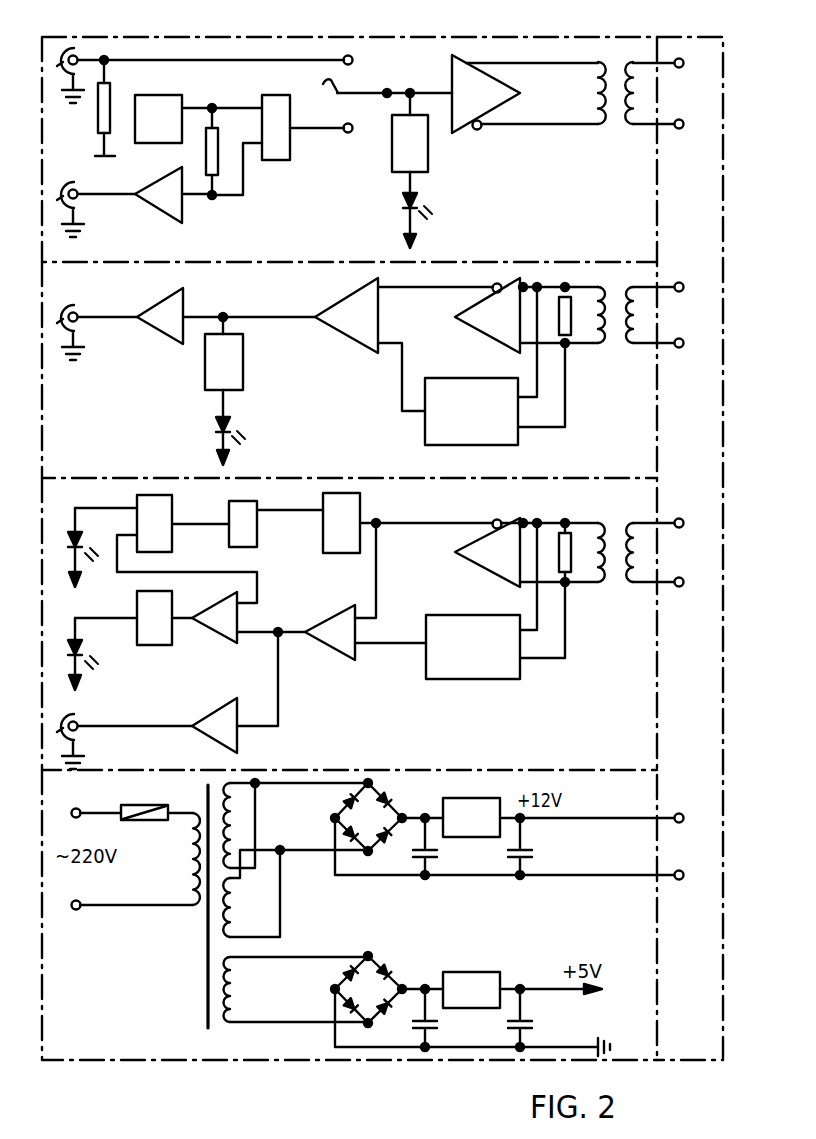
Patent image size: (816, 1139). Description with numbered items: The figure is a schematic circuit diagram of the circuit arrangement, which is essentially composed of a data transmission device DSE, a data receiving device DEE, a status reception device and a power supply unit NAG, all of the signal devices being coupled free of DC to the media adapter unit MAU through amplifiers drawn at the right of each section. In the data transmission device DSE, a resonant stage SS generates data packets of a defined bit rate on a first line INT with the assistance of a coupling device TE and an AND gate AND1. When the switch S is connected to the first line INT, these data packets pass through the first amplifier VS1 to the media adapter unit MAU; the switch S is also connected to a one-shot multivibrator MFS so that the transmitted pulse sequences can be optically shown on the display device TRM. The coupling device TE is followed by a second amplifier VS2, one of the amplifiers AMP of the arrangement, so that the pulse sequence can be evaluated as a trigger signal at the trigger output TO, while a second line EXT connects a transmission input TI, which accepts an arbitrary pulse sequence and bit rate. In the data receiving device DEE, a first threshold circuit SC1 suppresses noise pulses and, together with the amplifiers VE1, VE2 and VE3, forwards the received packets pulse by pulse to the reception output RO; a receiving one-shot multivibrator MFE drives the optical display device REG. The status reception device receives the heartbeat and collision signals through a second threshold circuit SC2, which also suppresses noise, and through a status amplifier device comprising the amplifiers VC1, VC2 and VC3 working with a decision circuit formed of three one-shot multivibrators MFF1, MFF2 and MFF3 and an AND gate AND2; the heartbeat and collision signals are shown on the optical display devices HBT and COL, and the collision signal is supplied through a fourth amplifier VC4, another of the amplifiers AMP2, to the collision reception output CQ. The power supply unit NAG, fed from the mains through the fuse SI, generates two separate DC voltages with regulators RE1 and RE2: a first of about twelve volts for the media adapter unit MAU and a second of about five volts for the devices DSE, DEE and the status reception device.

The transmission input TI is at (65, 75).
The trigger signal output TO is at (65, 209).
The resonant stage SS is at (150, 95).
The coupling device TE is at (212, 150).
The AND gate AND1 is at (272, 161).
The first amplifier VS1 is at (467, 130).
The second amplifier VS2 is at (160, 204).
The one-shot multivibrator MFS is at (425, 158).
The display device TRM is at (410, 197).
The second line EXT is at (352, 60).
The first line INT is at (330, 146).
The switch S is at (327, 80).
The reception output RO is at (64, 332).
The amplifier VE1 is at (482, 326).
The amplifier VE2 is at (343, 326).
The amplifier VE3 is at (158, 326).
The amplifier label AMP is at (470, 323).
The amplifier label AMP2 is at (238, 643).
The receiving one-shot multivibrator MFE is at (243, 360).
The optical display device REG is at (215, 428).
The first threshold circuit SC1 is at (480, 438).
The optical display device COL is at (73, 536).
The optical display device HBT is at (75, 632).
The collision reception output CQ is at (65, 741).
The one-shot multivibrator MFF1 is at (372, 508).
The one-shot multivibrator MFF2 is at (167, 536).
The one-shot multivibrator MFF3 is at (142, 632).
The AND gate AND2 is at (260, 526).
The amplifier VC1 is at (490, 527).
The amplifier VC2 is at (334, 642).
The amplifier VC3 is at (222, 630).
The fourth amplifier VC4 is at (212, 732).
The second threshold circuit SC2 is at (481, 677).
The fuse SI is at (153, 806).
The regulator +12V RE1 is at (475, 837).
The regulator +5V RE2 is at (465, 972).
The data transmission device DSE is at (349, 149).
The data receiving device DEE is at (349, 370).
The power supply unit NAG is at (349, 915).
The media adapter unit MAU is at (690, 548).